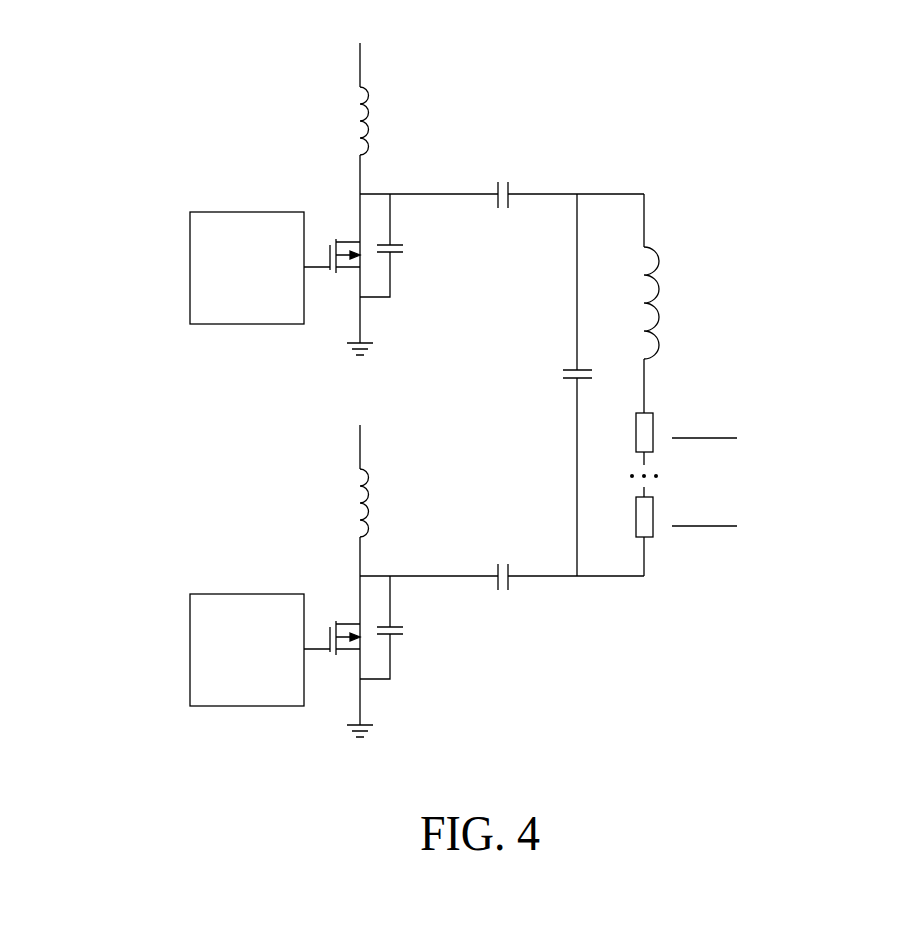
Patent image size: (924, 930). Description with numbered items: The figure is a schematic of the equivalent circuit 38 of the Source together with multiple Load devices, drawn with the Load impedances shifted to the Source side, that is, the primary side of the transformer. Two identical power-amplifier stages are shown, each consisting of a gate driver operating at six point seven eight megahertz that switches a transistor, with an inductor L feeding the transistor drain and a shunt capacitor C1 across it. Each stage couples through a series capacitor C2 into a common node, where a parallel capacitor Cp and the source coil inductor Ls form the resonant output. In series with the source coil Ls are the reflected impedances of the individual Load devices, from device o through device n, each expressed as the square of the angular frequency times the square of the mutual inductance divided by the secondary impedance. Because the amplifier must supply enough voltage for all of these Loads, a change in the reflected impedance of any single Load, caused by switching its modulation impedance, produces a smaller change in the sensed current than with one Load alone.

The equivalent circuit 38 is at (134, 141).
The inductor L is at (374, 312).
The shunt capacitor C1 is at (399, 436).
The series capacitor C2 is at (500, 371).
The parallel capacitor Cp is at (563, 385).
The source coil inductor Ls is at (633, 303).